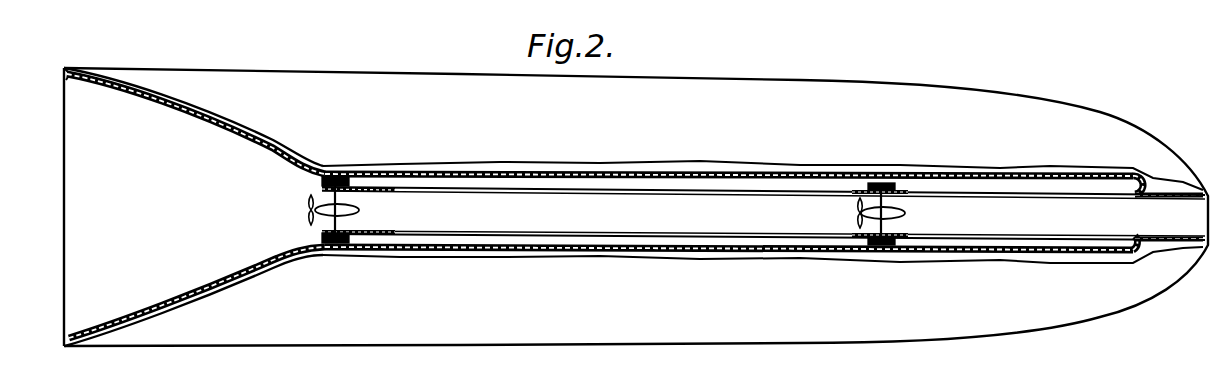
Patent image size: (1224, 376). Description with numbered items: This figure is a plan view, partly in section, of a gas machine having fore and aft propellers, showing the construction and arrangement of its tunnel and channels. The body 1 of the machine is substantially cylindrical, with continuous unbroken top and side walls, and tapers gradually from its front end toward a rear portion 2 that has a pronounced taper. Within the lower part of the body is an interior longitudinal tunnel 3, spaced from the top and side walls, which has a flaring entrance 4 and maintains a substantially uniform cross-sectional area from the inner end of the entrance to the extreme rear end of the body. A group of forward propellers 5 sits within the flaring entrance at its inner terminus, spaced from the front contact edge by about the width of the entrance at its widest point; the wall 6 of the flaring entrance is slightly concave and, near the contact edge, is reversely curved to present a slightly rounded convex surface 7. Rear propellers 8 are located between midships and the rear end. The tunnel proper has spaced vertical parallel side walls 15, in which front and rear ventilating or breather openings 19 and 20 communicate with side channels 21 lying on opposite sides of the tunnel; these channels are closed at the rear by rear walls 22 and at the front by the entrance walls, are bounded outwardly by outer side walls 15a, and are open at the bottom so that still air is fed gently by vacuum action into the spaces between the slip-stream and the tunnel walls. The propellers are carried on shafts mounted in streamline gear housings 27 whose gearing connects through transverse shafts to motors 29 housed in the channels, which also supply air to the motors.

The body 1 is at (726, 94).
The rear portion 2 is at (1085, 109).
The tunnel 3 is at (357, 178).
The flaring entrance 4 is at (118, 207).
The forward propellers 5 is at (309, 210).
The wall of the flaring entrance 6 is at (188, 110).
The convex surface 7 is at (66, 72).
The rear propellers 8 is at (858, 213).
The side walls 15 is at (633, 230).
The outer side walls of the channels 15a is at (663, 174).
The front ventilating openings 19 is at (390, 193).
The rear ventilating openings 20 is at (907, 196).
The side channels 21 is at (498, 180).
The rear walls 22 is at (1163, 160).
The gear housings 27 is at (872, 210).
The motors 29 is at (334, 245).